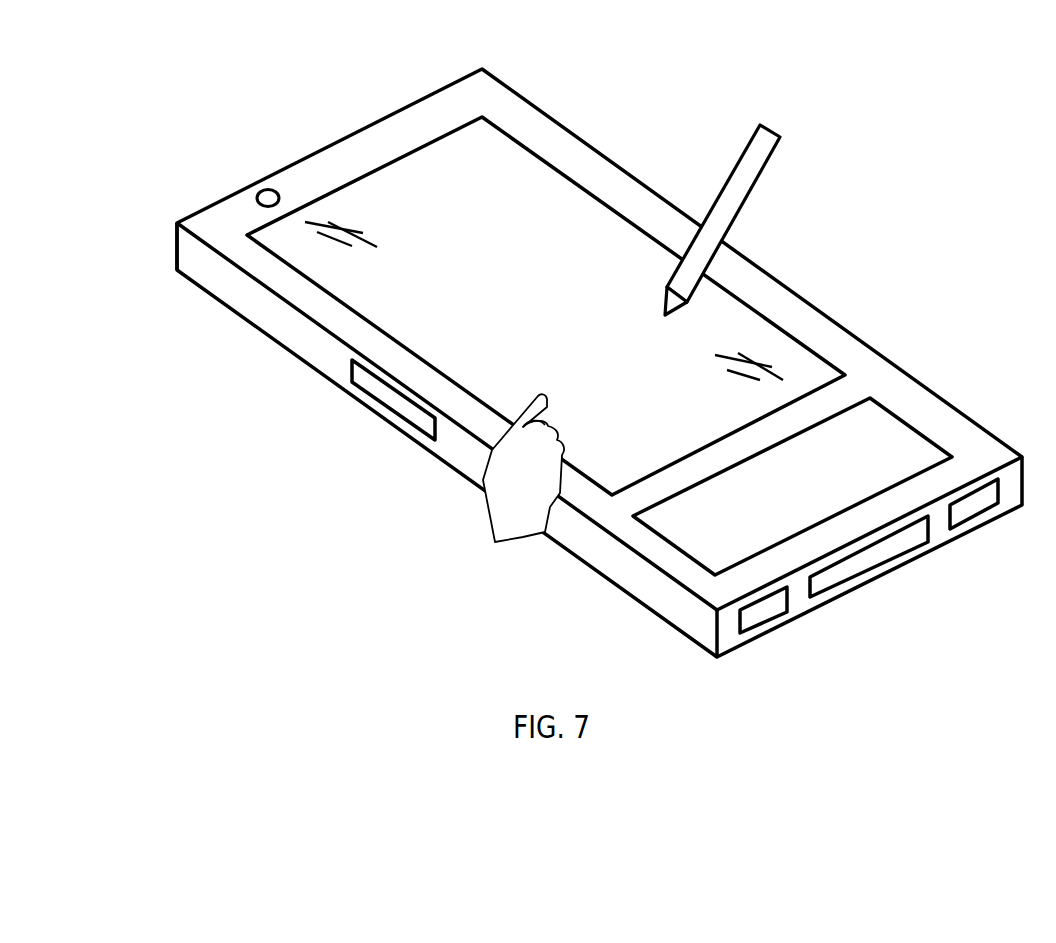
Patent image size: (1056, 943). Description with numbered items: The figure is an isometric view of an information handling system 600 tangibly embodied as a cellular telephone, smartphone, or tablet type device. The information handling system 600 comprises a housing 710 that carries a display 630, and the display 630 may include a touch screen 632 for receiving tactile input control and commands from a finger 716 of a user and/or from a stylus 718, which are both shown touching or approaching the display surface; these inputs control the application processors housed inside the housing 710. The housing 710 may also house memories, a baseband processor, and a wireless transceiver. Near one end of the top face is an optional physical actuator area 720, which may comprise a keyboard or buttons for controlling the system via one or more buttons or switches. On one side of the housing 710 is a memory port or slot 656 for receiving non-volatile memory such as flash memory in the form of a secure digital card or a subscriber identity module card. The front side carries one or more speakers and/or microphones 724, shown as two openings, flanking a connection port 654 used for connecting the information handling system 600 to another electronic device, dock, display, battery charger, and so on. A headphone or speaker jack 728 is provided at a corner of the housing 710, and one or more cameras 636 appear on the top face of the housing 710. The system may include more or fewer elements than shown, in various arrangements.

The information handling system 600 is at (587, 367).
The housing 710 is at (423, 95).
The headphone or speaker jack 728 is at (197, 208).
The display 630 is at (482, 177).
The touch screen 632 is at (577, 312).
The camera 636 is at (267, 187).
The stylus 718 is at (742, 155).
The finger 716 is at (540, 395).
The physical actuator area 720 is at (880, 447).
The memory port or slot 656 is at (363, 397).
The connection port 654 is at (887, 562).
The speakers and/or microphones 724 is at (768, 620).